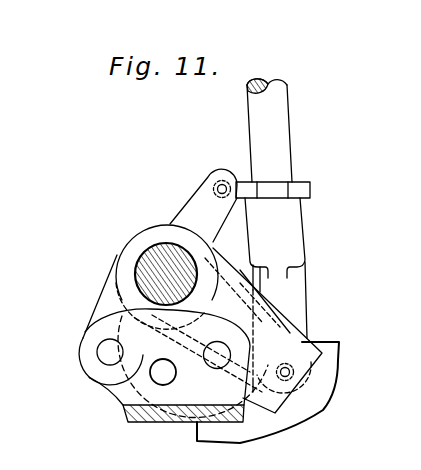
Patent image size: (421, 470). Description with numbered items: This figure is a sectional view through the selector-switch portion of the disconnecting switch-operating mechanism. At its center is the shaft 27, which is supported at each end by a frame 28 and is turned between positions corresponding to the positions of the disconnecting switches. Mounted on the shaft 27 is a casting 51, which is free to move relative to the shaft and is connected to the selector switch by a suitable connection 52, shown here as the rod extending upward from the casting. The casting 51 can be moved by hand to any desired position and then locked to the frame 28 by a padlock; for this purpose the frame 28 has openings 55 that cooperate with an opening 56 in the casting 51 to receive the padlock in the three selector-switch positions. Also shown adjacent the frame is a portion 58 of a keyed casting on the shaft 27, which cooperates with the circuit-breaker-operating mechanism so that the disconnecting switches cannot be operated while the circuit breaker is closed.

The shaft 27 is at (137, 268).
The frame 28 is at (83, 348).
The casting 51 is at (292, 332).
The connection 52 is at (286, 147).
The openings 55 is at (173, 381).
The opening 56 is at (98, 361).
The portion 58 is at (95, 376).